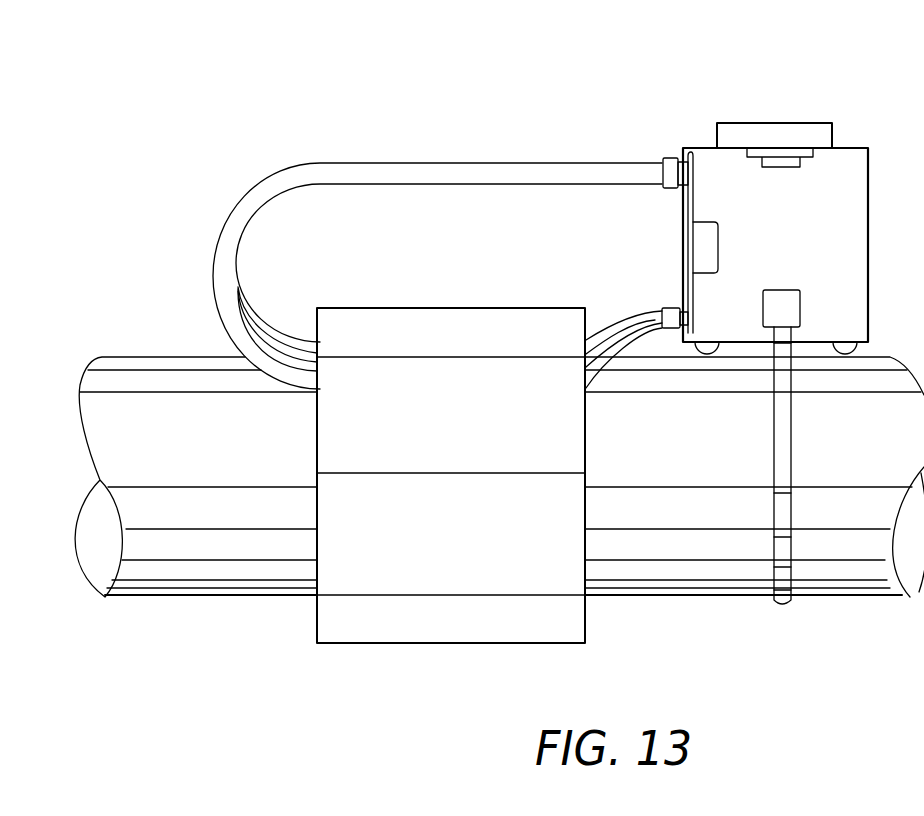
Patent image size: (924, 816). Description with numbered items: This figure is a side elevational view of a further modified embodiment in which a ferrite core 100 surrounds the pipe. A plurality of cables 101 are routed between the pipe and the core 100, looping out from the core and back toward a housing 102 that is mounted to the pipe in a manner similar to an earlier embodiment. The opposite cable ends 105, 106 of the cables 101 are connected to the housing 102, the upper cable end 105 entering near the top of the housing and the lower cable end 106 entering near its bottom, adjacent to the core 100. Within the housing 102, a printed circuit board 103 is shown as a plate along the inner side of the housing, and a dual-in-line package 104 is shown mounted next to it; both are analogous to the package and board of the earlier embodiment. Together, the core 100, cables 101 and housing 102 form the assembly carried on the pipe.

The ferrite core 100 is at (572, 628).
The cables 101 is at (435, 170).
The housing 102 is at (840, 192).
The printed circuit board 103 is at (693, 205).
The dual-in-line package 104 is at (703, 247).
The cable end 105 is at (672, 165).
The cable end 106 is at (663, 308).